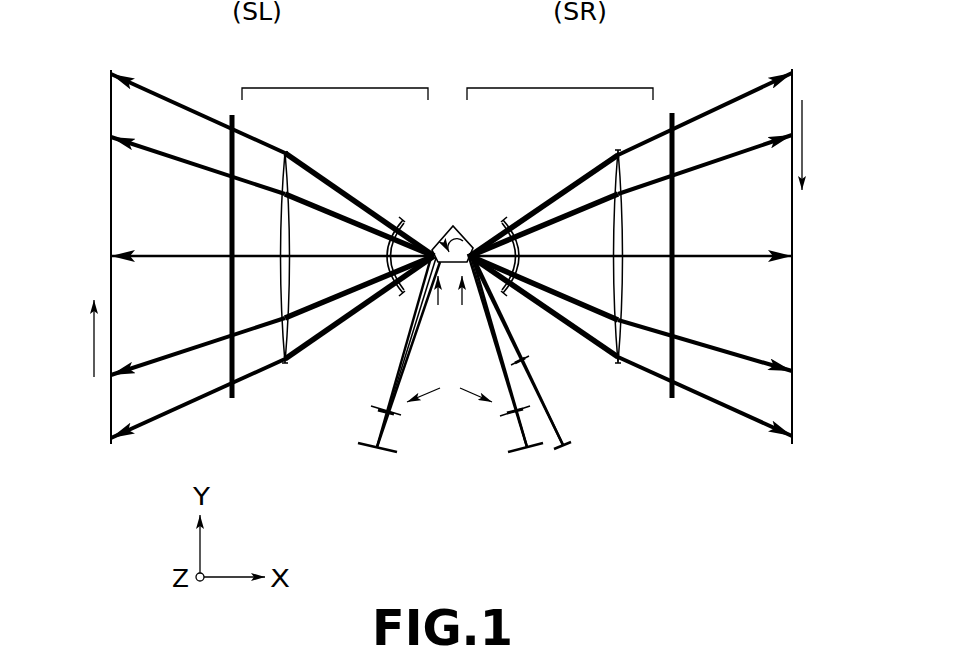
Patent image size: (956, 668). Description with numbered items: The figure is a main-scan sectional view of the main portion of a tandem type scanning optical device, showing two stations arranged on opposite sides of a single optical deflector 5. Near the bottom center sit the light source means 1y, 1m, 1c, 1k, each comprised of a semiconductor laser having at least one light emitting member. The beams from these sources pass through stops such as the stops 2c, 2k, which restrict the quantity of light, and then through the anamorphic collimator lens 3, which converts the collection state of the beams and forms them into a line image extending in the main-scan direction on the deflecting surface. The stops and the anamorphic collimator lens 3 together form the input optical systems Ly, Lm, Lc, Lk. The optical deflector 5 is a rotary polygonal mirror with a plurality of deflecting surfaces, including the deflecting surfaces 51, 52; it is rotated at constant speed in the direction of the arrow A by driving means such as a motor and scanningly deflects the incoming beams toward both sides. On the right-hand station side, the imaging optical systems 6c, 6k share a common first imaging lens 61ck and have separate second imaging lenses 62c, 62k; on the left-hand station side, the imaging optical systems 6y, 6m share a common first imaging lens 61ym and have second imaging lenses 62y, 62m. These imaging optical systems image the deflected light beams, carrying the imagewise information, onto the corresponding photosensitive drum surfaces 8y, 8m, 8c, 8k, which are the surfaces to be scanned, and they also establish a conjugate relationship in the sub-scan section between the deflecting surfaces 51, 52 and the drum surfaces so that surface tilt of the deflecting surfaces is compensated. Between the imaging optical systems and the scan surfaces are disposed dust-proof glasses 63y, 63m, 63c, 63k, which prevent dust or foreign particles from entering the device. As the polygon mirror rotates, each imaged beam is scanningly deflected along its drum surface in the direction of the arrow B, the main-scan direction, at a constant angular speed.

The light source means 1y is at (358, 471).
The light source means 1m is at (382, 452).
The light source means 1c is at (544, 471).
The light source means 1k is at (530, 453).
The stop 2c is at (485, 439).
The stop 2k is at (400, 415).
The anamorphic collimator lens 3 is at (449, 386).
The optical deflector 5 is at (452, 226).
The arrow A is at (463, 241).
The deflecting surface 51 is at (468, 309).
The deflecting surface 52 is at (434, 309).
The first imaging lens 61ym is at (403, 220).
The first imaging lens 61ck is at (500, 219).
The second imaging lens 62y is at (297, 227).
The second imaging lens 62m is at (285, 150).
The second imaging lens 62c is at (599, 227).
The second imaging lens 62k is at (617, 150).
The dust-proof glass 63y is at (204, 225).
The dust-proof glass 63m is at (232, 115).
The dust-proof glass 63c is at (694, 218).
The dust-proof glass 63k is at (672, 113).
The imaging optical system 6y is at (335, 80).
The imaging optical system 6m is at (335, 80).
The imaging optical system 6c is at (560, 79).
The imaging optical system 6k is at (560, 79).
The photosensitive drum surface 8y is at (107, 286).
The photosensitive drum surface 8m is at (110, 420).
The photosensitive drum surface 8c is at (772, 286).
The photosensitive drum surface 8k is at (793, 427).
The input optical system Ly is at (340, 403).
The input optical system Lm is at (380, 378).
The input optical system Lc is at (483, 444).
The input optical system Lk is at (513, 415).
The arrow B is at (450, 238).